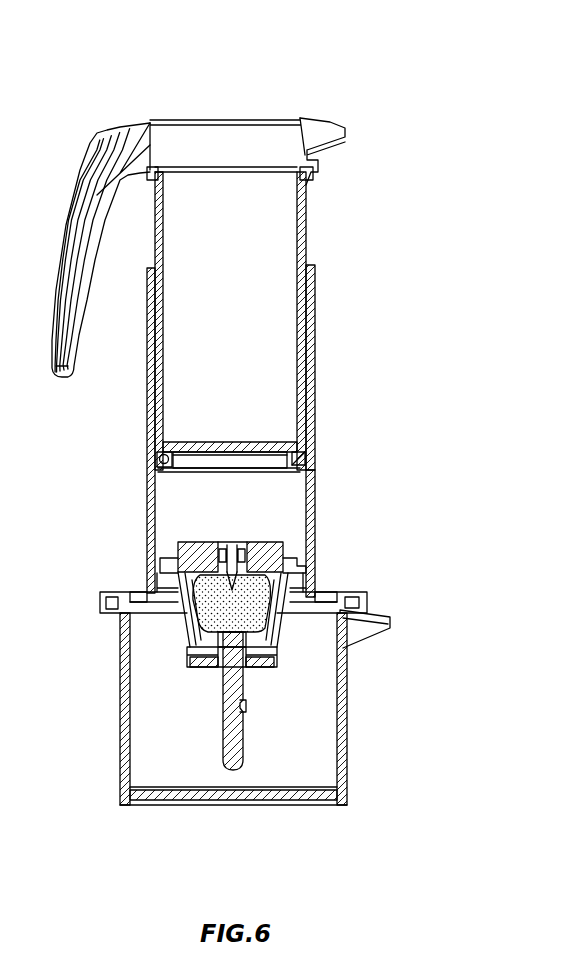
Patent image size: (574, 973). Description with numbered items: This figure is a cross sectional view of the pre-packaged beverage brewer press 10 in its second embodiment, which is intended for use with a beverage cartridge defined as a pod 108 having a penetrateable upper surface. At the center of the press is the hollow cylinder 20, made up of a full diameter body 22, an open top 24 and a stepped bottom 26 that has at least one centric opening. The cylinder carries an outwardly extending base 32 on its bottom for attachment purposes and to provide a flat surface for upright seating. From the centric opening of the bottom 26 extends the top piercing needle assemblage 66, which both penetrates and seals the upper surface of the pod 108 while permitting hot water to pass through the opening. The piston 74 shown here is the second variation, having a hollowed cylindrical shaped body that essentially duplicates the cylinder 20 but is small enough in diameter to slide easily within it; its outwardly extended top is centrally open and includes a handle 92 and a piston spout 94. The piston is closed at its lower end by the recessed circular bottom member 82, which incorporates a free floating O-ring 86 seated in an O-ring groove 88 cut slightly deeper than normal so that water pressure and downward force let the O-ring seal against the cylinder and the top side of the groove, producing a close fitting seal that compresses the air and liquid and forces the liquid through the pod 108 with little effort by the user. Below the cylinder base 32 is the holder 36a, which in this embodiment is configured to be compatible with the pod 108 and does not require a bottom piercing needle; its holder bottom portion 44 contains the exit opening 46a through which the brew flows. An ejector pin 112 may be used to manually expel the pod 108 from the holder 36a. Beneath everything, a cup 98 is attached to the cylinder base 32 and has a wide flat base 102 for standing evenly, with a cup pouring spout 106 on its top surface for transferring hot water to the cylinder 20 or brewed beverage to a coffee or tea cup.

The pre-packaged beverage brewer press 10 is at (222, 108).
The handle 92 is at (91, 150).
The piston spout 94 is at (330, 118).
The piston 74 is at (303, 218).
The open top 24 is at (312, 266).
The recessed circular bottom member 82 is at (255, 442).
The free floating O-ring 86 is at (305, 458).
The hollow cylinder 20 is at (317, 471).
The bottom 26 is at (258, 540).
The top piercing needle assemblage 66 is at (285, 562).
The O-ring groove 88 is at (153, 462).
The full diameter body 22 is at (150, 520).
The pod 108 is at (148, 585).
The outwardly extending base 32 is at (97, 608).
The holder 36a is at (215, 660).
The exit opening 46a is at (257, 668).
The cup 98 is at (118, 797).
The wide flat base 102 is at (233, 807).
The ejector pin 112 is at (247, 730).
The holder bottom portion 44 is at (262, 672).
The cup pouring spout 106 is at (386, 633).